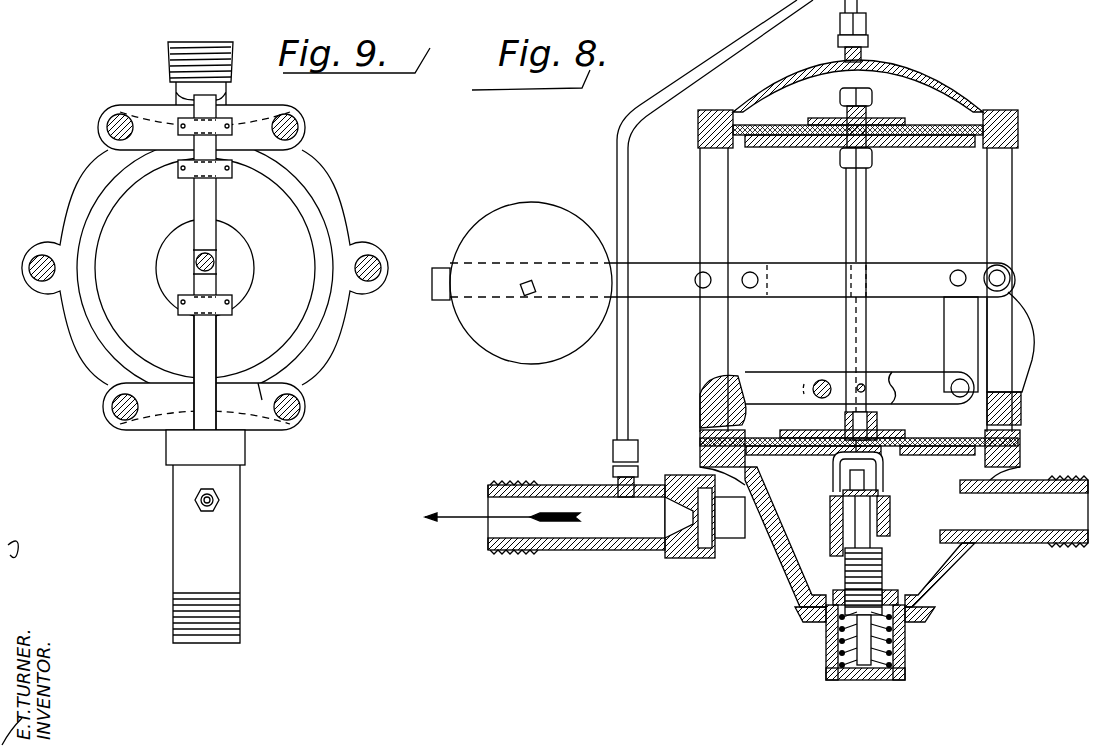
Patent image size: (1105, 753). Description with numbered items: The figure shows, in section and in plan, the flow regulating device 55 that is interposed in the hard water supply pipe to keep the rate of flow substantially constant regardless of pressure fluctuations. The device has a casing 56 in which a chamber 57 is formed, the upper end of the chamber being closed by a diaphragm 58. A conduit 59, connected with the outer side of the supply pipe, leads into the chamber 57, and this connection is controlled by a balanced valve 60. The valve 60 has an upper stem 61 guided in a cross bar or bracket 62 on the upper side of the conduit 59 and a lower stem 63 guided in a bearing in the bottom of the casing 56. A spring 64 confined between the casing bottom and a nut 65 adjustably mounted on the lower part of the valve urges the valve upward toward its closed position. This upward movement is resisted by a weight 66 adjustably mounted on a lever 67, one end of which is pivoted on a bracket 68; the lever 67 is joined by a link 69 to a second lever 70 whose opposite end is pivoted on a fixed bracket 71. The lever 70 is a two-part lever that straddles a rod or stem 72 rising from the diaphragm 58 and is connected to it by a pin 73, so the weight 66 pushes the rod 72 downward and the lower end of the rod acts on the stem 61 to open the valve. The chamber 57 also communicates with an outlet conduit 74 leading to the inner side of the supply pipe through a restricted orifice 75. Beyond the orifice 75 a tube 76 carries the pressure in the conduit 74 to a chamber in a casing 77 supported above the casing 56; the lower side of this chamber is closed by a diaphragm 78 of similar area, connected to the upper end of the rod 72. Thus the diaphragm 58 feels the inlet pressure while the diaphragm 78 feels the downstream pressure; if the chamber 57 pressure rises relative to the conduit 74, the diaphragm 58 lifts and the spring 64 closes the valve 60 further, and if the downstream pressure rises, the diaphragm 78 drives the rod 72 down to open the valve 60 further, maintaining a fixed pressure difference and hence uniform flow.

In FIG. 8, the flow regulating device 55 is at (856, 290).
In FIG. 9, the casing 56 is at (62, 318).
In FIG. 8, the casing 56 is at (784, 578).
In FIG. 8, the chamber 57 is at (801, 529).
In FIG. 9, the diaphragm 58 is at (188, 309).
In FIG. 8, the diaphragm 58 is at (970, 440).
In FIG. 9, the conduit 59 is at (168, 58).
In FIG. 8, the conduit 59 is at (1012, 532).
In FIG. 8, the balanced valve 60 is at (886, 492).
In FIG. 8, the stem 61 is at (833, 484).
In FIG. 8, the cross bar or bracket 62 is at (835, 460).
In FIG. 8, the stem 63 is at (832, 640).
In FIG. 8, the spring 64 is at (906, 628).
In FIG. 8, the nut 65 is at (893, 595).
In FIG. 8, the weight 66 is at (505, 353).
In FIG. 9, the lever 67 is at (192, 206).
In FIG. 8, the lever 67 is at (897, 272).
In FIG. 9, the bracket 68 is at (205, 128).
In FIG. 8, the bracket 68 is at (1010, 358).
In FIG. 9, the link 69 is at (205, 178).
In FIG. 8, the link 69 is at (960, 316).
In FIG. 9, the second lever 70 is at (190, 236).
In FIG. 8, the second lever 70 is at (910, 380).
In FIG. 9, the fixed bracket 71 is at (208, 347).
In FIG. 8, the fixed bracket 71 is at (745, 383).
In FIG. 9, the rod or stem 72 is at (215, 263).
In FIG. 8, the rod or stem 72 is at (863, 318).
In FIG. 8, the pin 73 is at (866, 386).
In FIG. 9, the outlet conduit 74 is at (222, 513).
In FIG. 8, the outlet conduit 74 is at (566, 468).
In FIG. 8, the restricted orifice 75 is at (690, 517).
In FIG. 9, the tube 76 is at (195, 500).
In FIG. 8, the tube 76 is at (627, 382).
In FIG. 8, the casing 77 is at (858, 80).
In FIG. 8, the diaphragm 78 is at (948, 132).